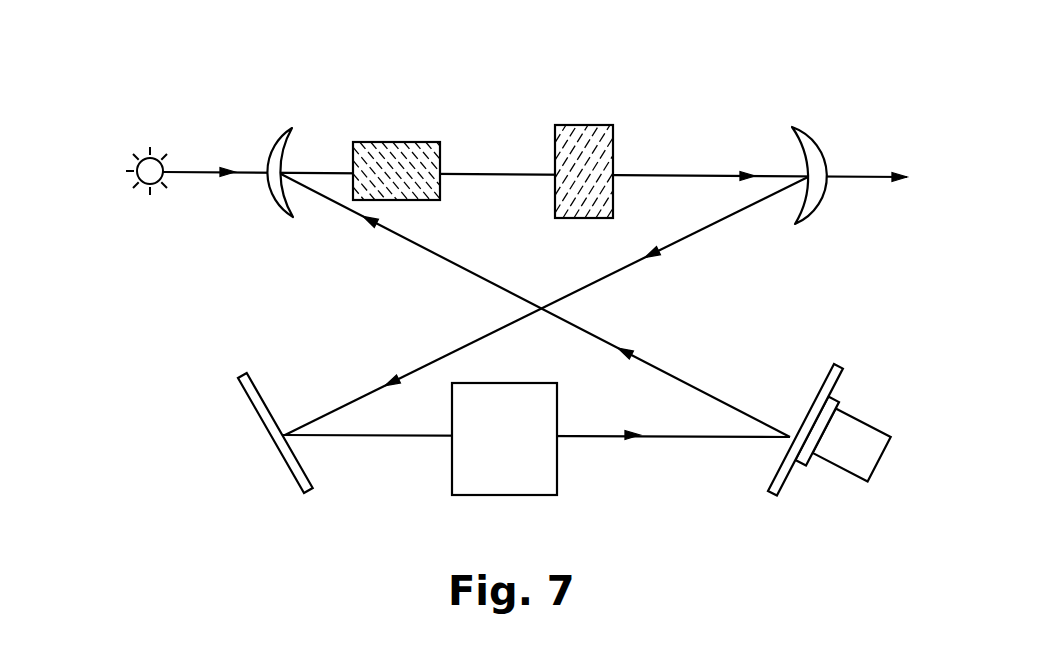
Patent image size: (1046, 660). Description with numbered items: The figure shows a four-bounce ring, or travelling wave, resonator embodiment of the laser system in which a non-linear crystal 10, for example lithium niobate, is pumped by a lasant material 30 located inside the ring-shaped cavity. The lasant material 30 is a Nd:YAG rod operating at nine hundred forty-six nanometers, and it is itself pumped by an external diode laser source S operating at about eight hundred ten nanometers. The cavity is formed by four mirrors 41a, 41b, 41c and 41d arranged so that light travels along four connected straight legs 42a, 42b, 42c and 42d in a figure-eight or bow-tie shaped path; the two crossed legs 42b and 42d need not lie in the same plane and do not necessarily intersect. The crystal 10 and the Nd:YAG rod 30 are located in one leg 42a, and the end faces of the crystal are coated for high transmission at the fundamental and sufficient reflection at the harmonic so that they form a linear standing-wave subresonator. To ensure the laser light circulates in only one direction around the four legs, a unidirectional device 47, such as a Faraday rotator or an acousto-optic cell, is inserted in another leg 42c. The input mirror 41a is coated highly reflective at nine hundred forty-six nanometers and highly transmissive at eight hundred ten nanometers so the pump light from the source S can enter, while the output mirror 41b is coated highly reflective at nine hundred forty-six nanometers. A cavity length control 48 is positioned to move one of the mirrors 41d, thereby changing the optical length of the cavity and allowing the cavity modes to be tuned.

The external diode laser source S is at (164, 144).
The non-linear crystal 10 is at (575, 125).
The lasant material 30 is at (397, 142).
The input mirror 41a is at (279, 209).
The output mirror 41b is at (817, 143).
The mirror 41c is at (305, 469).
The mirror 41d is at (766, 488).
The leg 42a is at (668, 176).
The leg 42b is at (457, 345).
The leg 42c is at (673, 437).
The leg 42d is at (597, 337).
The unidirectional device 47 is at (523, 495).
The cavity length control 48 is at (855, 418).